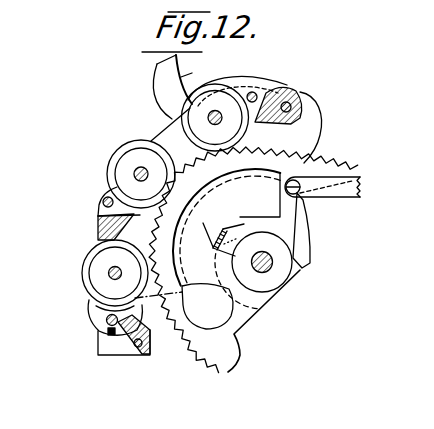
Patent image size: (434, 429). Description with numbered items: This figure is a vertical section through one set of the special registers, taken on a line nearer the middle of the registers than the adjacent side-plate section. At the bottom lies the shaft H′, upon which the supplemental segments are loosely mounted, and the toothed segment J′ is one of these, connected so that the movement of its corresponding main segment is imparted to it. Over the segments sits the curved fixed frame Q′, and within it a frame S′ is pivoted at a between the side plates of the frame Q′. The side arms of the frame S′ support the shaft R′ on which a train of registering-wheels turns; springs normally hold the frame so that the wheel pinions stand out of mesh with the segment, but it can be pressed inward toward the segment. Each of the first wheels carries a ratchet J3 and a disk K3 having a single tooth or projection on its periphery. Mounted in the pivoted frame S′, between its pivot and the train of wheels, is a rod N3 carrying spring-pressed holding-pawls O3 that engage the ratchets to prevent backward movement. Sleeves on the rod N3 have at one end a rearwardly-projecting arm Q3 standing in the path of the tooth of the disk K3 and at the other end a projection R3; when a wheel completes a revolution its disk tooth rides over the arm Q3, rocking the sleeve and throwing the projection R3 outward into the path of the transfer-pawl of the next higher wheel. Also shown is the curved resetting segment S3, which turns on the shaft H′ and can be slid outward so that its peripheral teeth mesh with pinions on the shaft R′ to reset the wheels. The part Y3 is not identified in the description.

The spring arm Y3 is at (165, 75).
The shaft R′ is at (208, 117).
The disk K3 is at (167, 151).
The ratchet J3 is at (141, 148).
The holding-pawl O3 is at (226, 82).
The rod N3 is at (255, 91).
The frame S′ is at (289, 88).
The pivot a is at (302, 102).
The curved frame Q′ is at (310, 125).
The rearwardly-projecting arm Q3 is at (242, 82).
The projection R3 is at (100, 210).
The curved segment S3 is at (304, 247).
The shaft H′ is at (270, 265).
The segment J′ is at (217, 347).